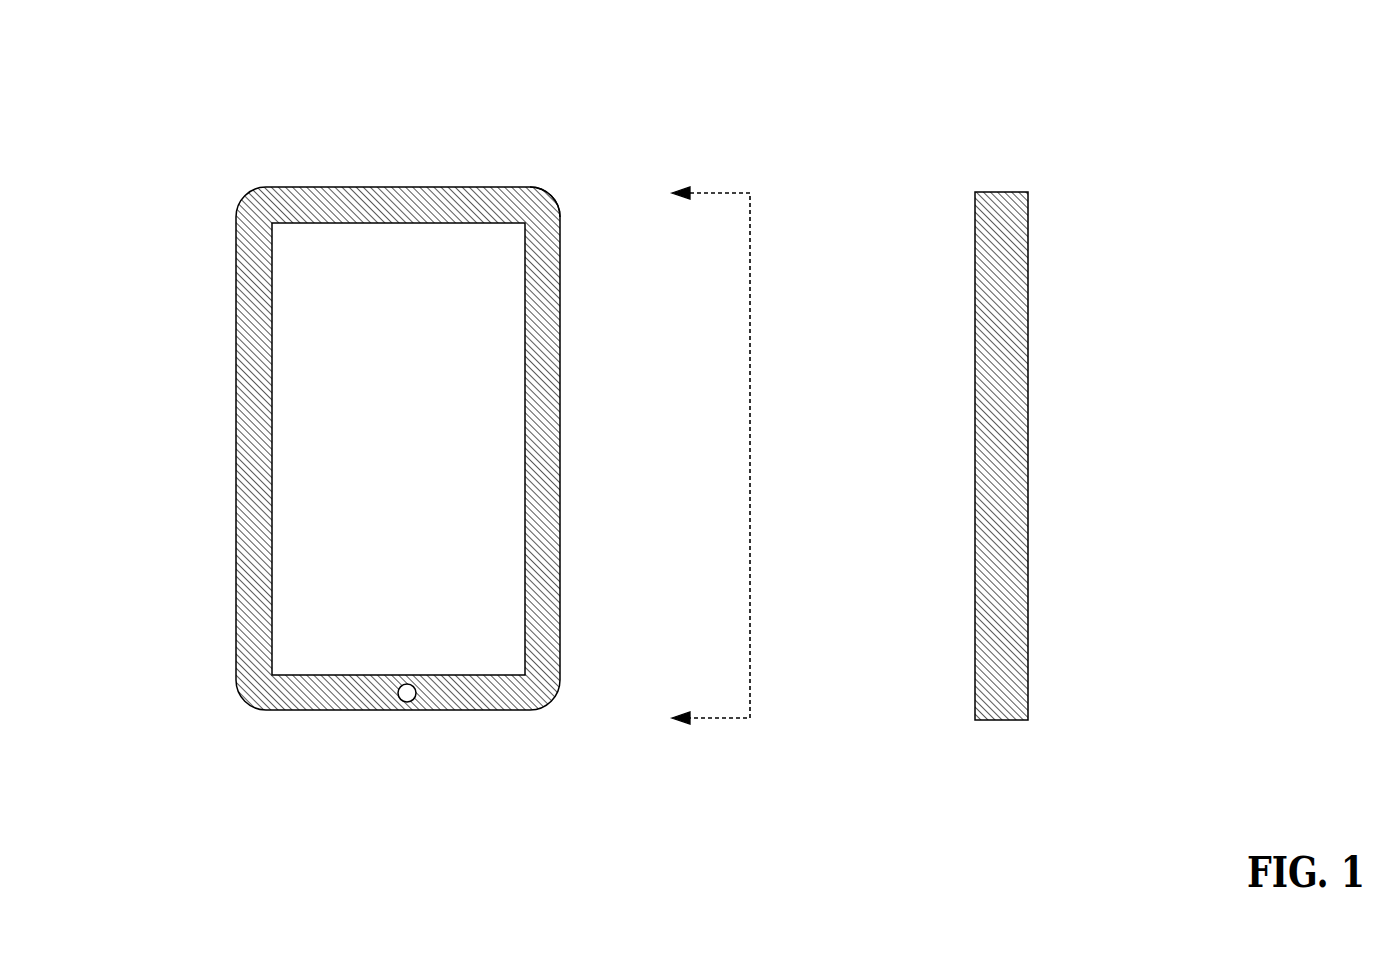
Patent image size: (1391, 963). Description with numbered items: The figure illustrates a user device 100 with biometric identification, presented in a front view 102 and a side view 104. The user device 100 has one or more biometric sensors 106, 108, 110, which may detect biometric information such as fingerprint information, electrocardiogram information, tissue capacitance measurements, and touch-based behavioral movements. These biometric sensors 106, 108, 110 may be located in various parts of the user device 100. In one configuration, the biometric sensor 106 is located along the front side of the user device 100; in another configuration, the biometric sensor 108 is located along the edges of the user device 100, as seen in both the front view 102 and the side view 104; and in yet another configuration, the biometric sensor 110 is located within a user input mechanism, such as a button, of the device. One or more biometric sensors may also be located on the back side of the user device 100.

The user device 100 is at (104, 66).
The front view 102 is at (414, 126).
The side view 104 is at (1017, 126).
The biometric sensor 106 is at (536, 203).
The biometric sensor 108 is at (236, 448).
The biometric sensor 110 is at (407, 702).